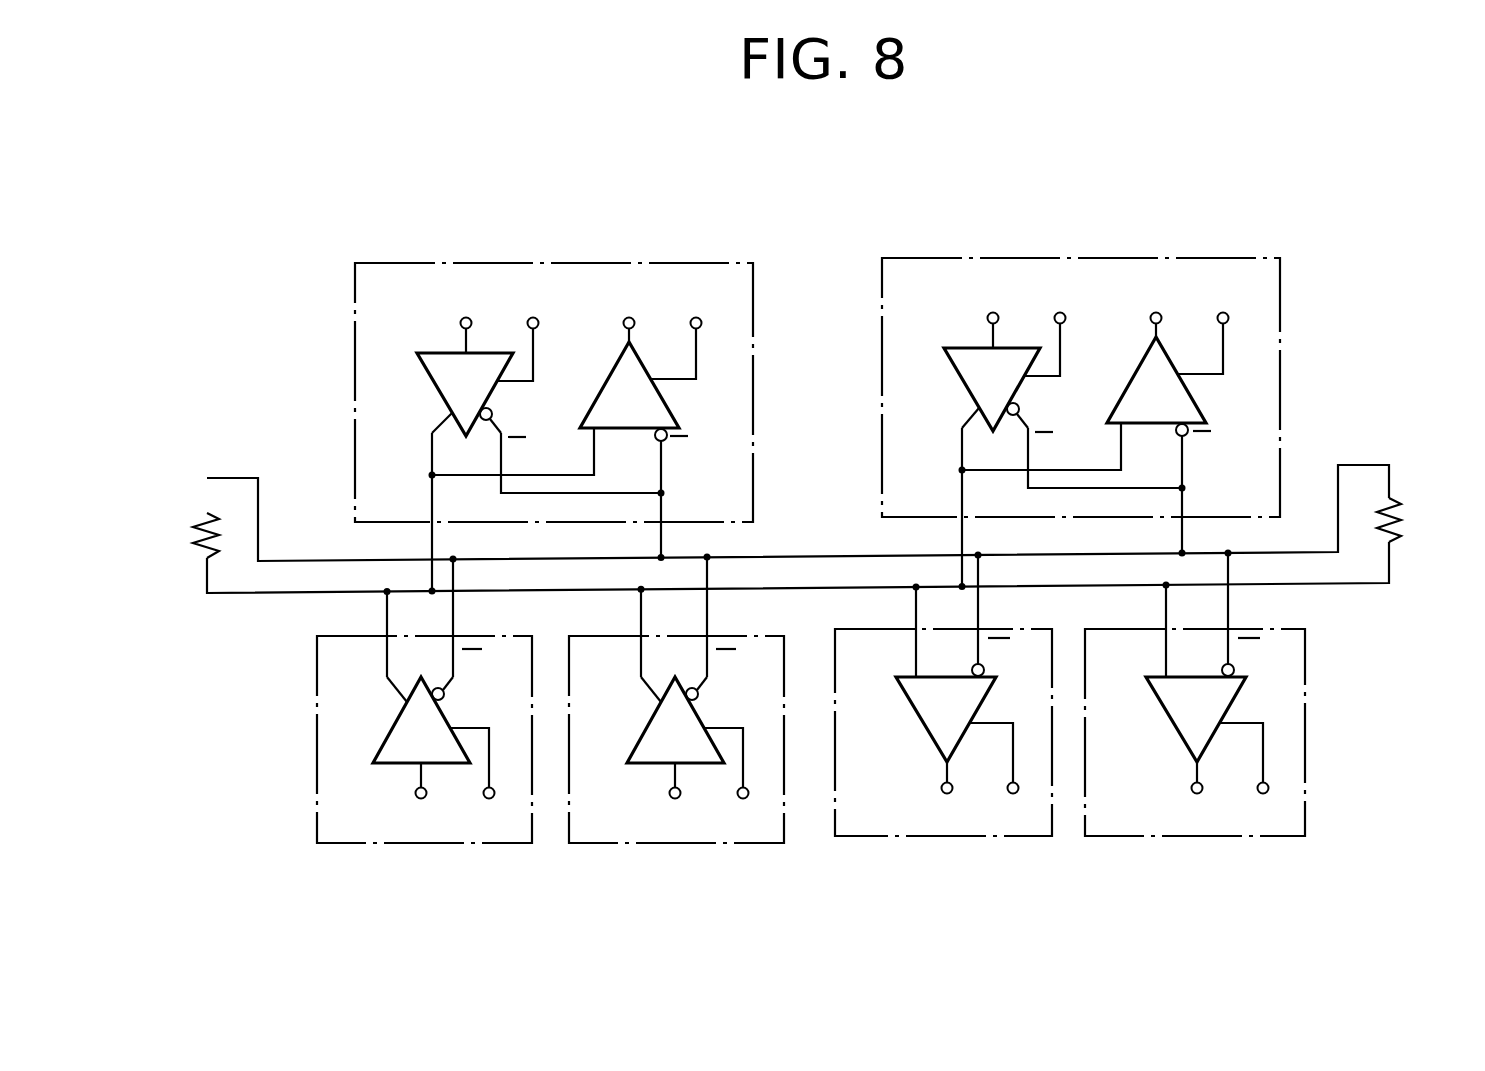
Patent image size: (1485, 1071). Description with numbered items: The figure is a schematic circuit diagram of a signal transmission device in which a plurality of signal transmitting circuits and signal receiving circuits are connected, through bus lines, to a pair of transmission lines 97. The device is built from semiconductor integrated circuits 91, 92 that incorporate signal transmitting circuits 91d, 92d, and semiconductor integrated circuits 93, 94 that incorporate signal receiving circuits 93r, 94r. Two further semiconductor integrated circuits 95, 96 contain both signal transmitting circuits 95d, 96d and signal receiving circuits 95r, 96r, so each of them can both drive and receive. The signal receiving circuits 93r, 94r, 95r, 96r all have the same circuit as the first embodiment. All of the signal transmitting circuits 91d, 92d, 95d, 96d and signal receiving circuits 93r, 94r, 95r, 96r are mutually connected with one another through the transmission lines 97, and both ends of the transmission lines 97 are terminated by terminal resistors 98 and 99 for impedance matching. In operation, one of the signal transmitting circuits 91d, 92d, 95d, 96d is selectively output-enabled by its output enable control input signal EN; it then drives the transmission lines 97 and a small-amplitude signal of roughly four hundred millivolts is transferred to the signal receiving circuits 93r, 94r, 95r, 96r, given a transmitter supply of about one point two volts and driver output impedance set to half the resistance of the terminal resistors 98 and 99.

The semiconductor integrated circuit 91 is at (389, 843).
The signal transmitting circuit 91d is at (393, 726).
The semiconductor integrated circuit 92 is at (676, 730).
The signal transmitting circuit 92d is at (658, 737).
The semiconductor integrated circuit 93 is at (965, 836).
The signal receiving circuit 93r is at (921, 720).
The semiconductor integrated circuit 94 is at (1195, 725).
The signal receiving circuit 94r is at (1181, 723).
The semiconductor integrated circuit 95 is at (418, 262).
The signal transmitting circuit 95d is at (437, 387).
The signal receiving circuit 95r is at (665, 405).
The semiconductor integrated circuit 96 is at (1081, 388).
The signal transmitting circuit 96d is at (975, 378).
The signal receiving circuit 96r is at (1180, 380).
The transmission lines 97 is at (282, 552).
The terminal resistor 98 is at (194, 539).
The terminal resistor 99 is at (1398, 522).